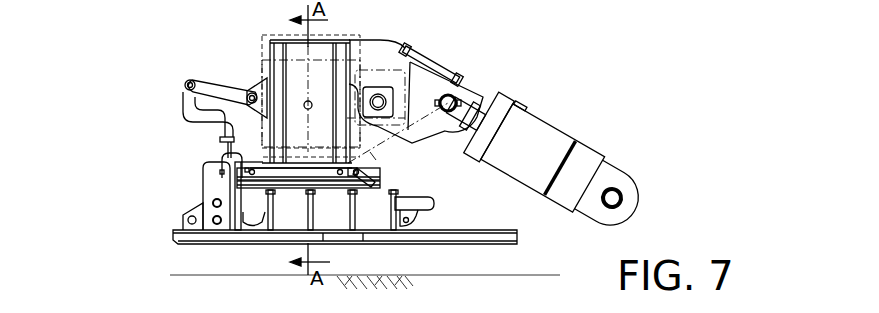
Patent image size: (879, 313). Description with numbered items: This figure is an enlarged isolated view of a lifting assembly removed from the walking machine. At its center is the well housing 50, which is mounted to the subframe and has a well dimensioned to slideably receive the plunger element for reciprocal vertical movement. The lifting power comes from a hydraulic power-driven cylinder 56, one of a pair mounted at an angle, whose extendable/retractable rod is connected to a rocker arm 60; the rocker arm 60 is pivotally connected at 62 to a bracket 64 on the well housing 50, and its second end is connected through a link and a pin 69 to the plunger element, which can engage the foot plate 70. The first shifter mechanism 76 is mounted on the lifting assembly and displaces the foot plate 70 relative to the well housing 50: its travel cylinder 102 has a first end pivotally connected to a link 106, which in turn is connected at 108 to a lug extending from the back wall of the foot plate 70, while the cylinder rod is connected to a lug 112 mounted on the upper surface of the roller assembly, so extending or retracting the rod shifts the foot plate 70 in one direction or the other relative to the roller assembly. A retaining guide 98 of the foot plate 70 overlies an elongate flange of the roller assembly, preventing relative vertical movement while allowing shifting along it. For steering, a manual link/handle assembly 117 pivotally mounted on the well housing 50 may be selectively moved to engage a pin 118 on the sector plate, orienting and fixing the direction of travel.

The well housing 50 is at (262, 52).
The hydraulic power-driven cylinder 56 is at (542, 140).
The rocker arm 60 is at (383, 63).
The pivotal connection 62 is at (448, 96).
The bracket 64 is at (373, 148).
The pin 69 is at (305, 103).
The foot plate 70 is at (227, 236).
The first shifter mechanism 76 is at (262, 184).
The retaining guide 98 is at (440, 206).
The travel cylinder 102 is at (290, 172).
The link 106 is at (210, 183).
The connection 108 is at (205, 221).
The lug 112 is at (168, 60).
The manual link/handle assembly 117 is at (176, 77).
The pin 118 is at (226, 160).